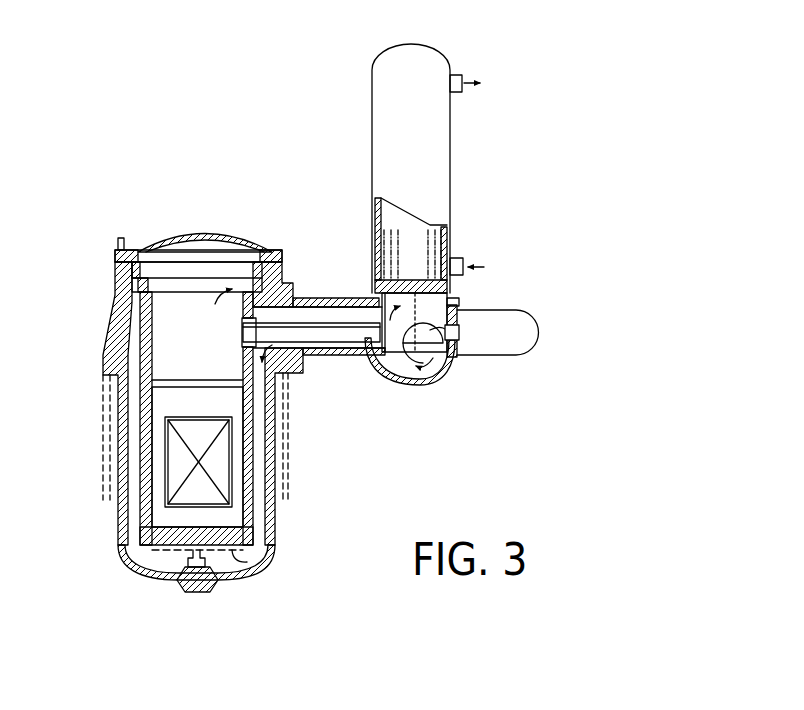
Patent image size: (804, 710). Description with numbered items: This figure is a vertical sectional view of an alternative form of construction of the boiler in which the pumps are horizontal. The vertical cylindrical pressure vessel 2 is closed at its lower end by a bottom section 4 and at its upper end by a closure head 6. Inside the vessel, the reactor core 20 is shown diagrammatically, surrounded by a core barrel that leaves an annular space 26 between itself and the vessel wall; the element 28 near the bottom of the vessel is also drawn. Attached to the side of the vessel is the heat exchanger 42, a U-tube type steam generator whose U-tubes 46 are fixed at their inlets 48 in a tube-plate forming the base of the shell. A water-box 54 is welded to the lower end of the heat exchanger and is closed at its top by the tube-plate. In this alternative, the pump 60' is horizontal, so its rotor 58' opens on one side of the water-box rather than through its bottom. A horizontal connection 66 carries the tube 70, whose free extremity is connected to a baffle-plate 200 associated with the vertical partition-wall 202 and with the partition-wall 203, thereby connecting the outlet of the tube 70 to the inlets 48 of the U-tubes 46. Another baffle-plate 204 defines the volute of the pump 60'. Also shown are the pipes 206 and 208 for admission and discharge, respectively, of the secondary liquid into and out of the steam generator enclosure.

The pressure vessel 2 is at (272, 528).
The bottom section 4 is at (227, 580).
The closure head 6 is at (160, 246).
The reactor core 20 is at (170, 440).
The annular space 26 is at (137, 511).
The floor plate 28 is at (182, 533).
The heat exchanger 42 is at (438, 142).
The U-tubes 46 is at (392, 230).
The inlets 48 is at (397, 283).
The water-box 54 is at (437, 367).
The rotor 58' is at (486, 355).
The pump 60' is at (502, 313).
The outer pipe 66 is at (322, 313).
The tube 70 is at (327, 330).
The baffle-plate 200 is at (393, 372).
The vertical partition-wall 202 is at (403, 357).
The partition-wall 203 is at (358, 310).
The baffle-plate 204 is at (467, 307).
The pipe 206 is at (452, 258).
The pipe 208 is at (457, 75).